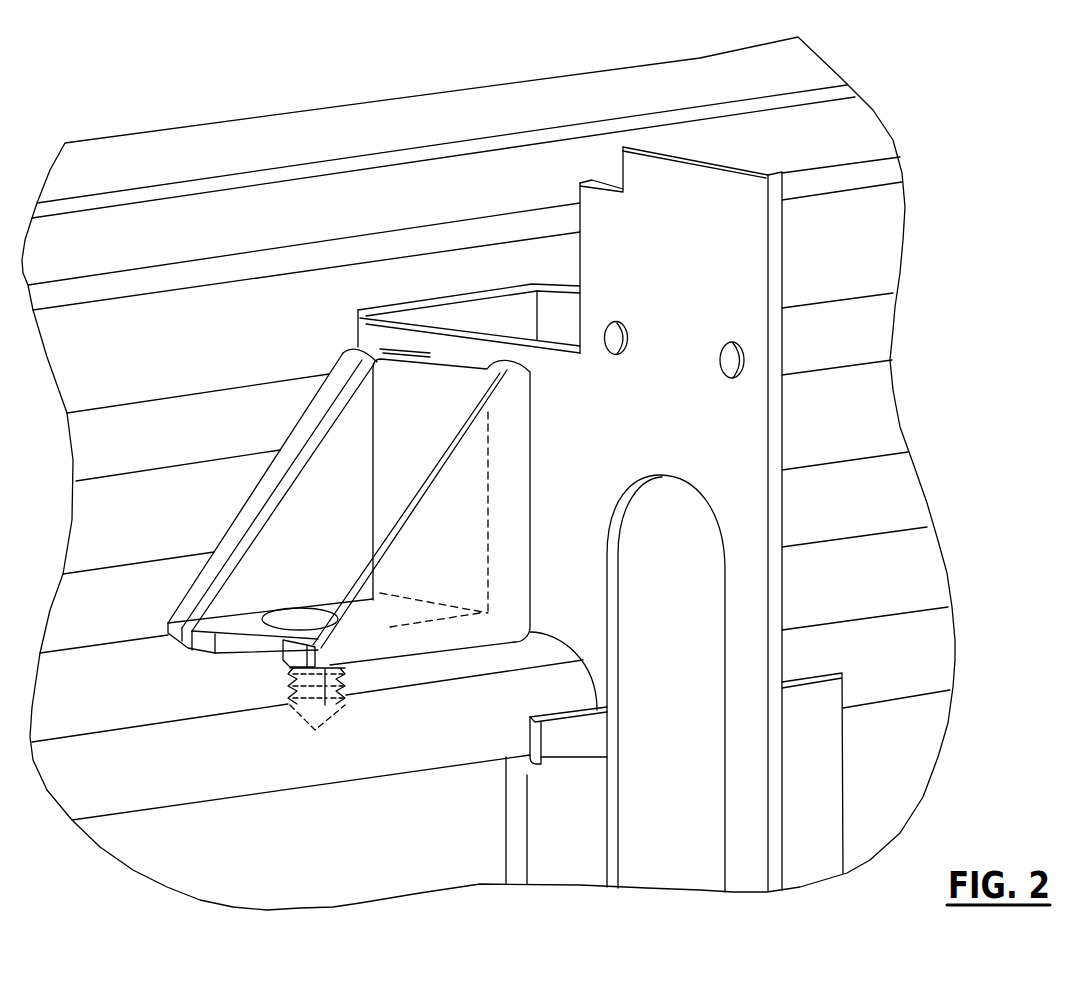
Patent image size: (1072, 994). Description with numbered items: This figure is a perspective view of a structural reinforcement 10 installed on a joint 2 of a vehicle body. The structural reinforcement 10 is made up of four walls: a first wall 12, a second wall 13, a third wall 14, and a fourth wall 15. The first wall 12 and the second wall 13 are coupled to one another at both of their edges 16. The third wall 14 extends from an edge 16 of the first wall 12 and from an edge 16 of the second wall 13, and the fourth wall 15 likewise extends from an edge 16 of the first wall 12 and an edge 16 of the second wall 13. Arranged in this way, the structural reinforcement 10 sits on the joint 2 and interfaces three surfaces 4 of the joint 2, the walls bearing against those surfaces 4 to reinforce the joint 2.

The joint 2 is at (448, 680).
The surfaces 4 is at (285, 410).
The structural reinforcement 10 is at (365, 486).
The first wall 12 is at (417, 406).
The second wall 13 is at (277, 628).
The third wall 14 is at (312, 527).
The fourth wall 15 is at (500, 560).
The edges 16 is at (373, 357).